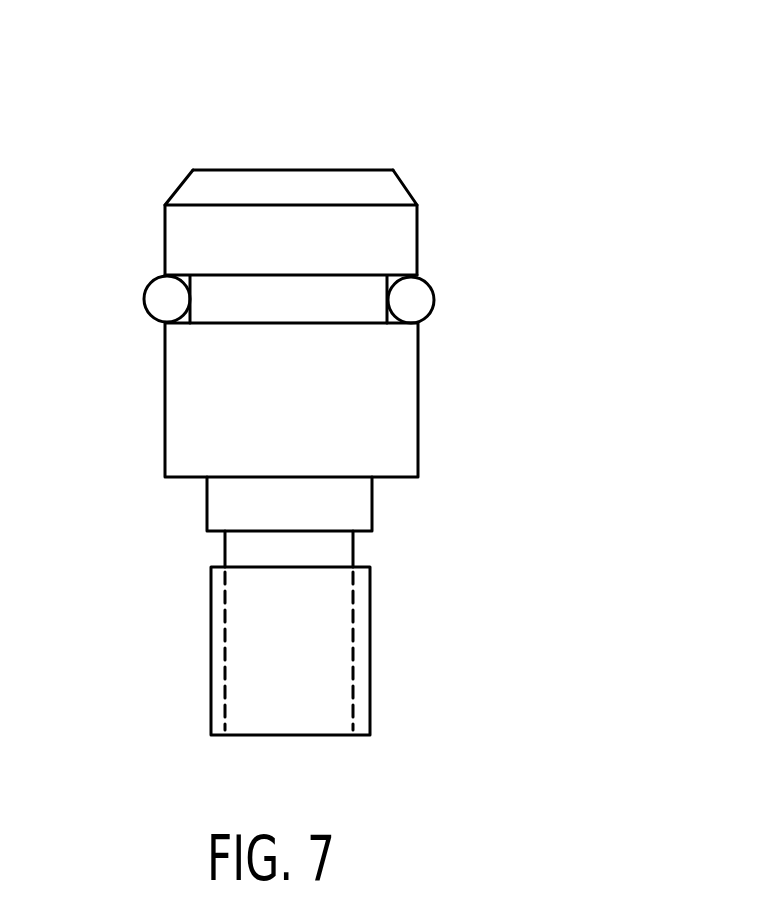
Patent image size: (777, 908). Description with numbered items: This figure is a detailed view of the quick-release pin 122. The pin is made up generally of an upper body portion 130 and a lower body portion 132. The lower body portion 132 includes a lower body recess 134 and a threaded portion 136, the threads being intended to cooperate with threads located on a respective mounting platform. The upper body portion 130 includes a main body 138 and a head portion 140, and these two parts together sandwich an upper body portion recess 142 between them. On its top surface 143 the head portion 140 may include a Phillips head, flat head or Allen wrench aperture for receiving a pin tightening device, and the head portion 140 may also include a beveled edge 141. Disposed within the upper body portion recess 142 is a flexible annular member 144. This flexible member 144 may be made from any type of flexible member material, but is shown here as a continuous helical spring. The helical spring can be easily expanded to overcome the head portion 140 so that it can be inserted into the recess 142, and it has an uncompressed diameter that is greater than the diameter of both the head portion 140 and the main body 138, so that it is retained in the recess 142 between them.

The quick-release pin 122 is at (533, 80).
The upper body portion 130 is at (495, 163).
The lower body portion 132 is at (495, 482).
The lower body recess 134 is at (225, 550).
The threaded portion 136 is at (212, 645).
The main body 138 is at (165, 393).
The head portion 140 is at (165, 240).
The beveled edge 141 is at (178, 195).
The upper body portion recess 142 is at (182, 278).
The top surface 143 is at (312, 170).
The flexible annular member 144 is at (432, 320).